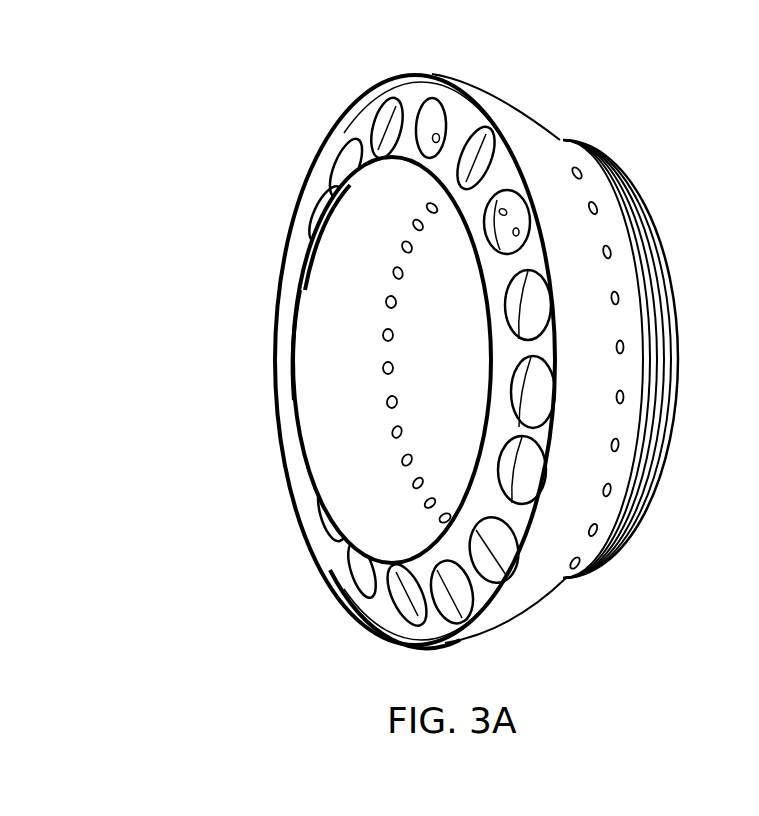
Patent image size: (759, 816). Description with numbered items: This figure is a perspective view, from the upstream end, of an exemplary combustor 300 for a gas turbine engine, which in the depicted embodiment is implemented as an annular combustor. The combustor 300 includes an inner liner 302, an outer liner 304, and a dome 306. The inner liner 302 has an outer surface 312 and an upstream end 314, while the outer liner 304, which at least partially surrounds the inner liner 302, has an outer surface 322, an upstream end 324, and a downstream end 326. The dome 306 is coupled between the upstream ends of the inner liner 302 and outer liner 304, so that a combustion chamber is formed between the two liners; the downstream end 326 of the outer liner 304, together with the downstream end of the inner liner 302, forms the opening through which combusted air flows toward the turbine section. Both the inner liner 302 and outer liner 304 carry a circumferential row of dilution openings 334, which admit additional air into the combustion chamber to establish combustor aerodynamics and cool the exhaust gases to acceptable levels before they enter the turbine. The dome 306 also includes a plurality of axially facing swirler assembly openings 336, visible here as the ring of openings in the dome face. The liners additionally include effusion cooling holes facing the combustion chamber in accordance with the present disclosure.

The combustor 300 is at (205, 136).
The inner liner 302 is at (372, 433).
The outer liner 304 is at (608, 365).
The dome 306 is at (380, 608).
The outer surface 312 is at (335, 239).
The upstream end 314 is at (301, 272).
The outer surface 322 is at (528, 130).
The upstream end 324 is at (280, 285).
The downstream end 326 is at (681, 425).
The dilution openings 334 is at (384, 368).
The swirler assembly openings 336 is at (388, 122).